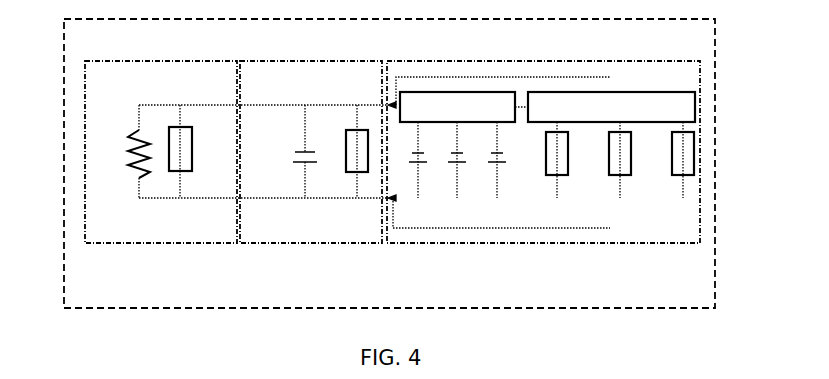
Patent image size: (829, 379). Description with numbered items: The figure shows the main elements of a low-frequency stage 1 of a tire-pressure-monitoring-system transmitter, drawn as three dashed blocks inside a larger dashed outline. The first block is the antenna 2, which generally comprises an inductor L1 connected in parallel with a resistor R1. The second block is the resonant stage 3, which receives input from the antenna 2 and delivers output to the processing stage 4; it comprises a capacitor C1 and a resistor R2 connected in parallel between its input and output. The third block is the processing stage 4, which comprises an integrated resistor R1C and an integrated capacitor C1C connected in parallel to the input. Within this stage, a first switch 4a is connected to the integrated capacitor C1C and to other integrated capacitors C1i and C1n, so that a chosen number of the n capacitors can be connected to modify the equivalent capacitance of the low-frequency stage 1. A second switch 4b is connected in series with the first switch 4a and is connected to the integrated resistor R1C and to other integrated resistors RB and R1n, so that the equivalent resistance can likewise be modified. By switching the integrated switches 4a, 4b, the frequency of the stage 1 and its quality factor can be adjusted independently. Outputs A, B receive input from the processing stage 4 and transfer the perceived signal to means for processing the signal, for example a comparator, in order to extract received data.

The low-frequency stage 1 is at (172, 310).
The antenna 2 is at (236, 179).
The resonant stage 3 is at (305, 179).
The processing stage 4 is at (542, 179).
The first switch 4a is at (457, 107).
The second switch 4b is at (611, 107).
The inductor L1 is at (127, 183).
The resistor R1 is at (191, 165).
The capacitor C1 is at (295, 161).
The resistor R2 is at (347, 166).
The integrated capacitor C1C is at (412, 167).
The integrated capacitor C1i is at (452, 167).
The integrated capacitor C1n is at (492, 167).
The integrated resistor R1C is at (545, 160).
The integrated resistor RB is at (607, 161).
The integrated resistor R1n is at (671, 161).
The output A is at (506, 90).
The output B is at (506, 214).